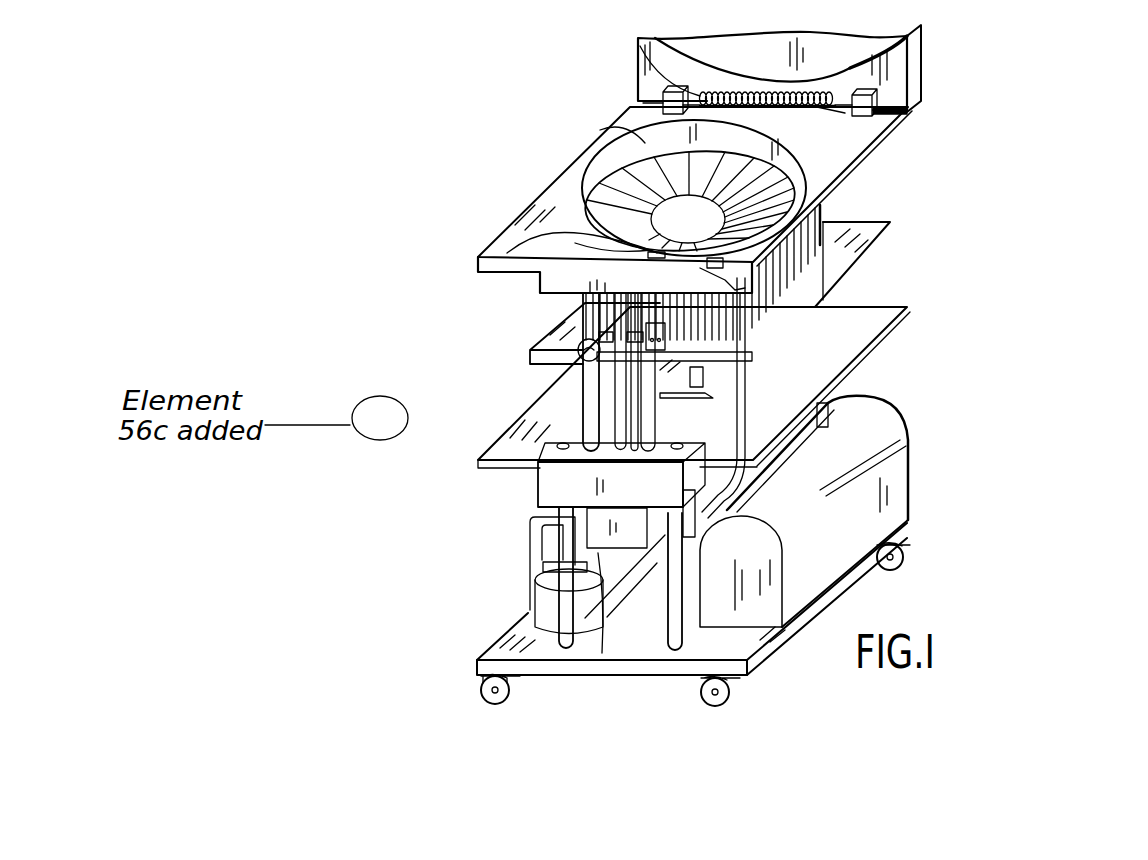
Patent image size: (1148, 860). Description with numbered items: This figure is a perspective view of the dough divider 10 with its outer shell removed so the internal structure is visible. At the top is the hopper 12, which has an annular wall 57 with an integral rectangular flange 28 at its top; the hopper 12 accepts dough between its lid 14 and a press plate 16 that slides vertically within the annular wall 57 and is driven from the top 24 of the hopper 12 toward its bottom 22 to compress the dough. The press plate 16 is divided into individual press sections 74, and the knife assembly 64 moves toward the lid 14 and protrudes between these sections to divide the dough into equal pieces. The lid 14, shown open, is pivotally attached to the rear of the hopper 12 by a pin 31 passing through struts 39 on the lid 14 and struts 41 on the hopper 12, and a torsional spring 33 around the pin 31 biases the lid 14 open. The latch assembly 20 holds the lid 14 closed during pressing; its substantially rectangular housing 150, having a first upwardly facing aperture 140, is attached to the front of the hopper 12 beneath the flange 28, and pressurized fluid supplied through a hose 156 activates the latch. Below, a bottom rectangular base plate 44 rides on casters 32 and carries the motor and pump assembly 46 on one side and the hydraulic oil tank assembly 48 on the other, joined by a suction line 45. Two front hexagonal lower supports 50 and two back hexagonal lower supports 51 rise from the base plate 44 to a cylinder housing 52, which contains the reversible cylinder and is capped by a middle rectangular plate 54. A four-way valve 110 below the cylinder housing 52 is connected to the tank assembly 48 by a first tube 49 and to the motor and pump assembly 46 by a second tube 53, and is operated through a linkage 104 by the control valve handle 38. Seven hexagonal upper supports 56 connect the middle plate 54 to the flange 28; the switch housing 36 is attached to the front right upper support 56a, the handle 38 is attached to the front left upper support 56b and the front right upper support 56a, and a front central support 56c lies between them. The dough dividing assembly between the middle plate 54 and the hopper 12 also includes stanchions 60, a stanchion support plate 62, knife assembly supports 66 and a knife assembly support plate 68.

The dough divider 10 is at (408, 379).
The hopper 12 is at (550, 186).
The lid 14 is at (930, 50).
The press plate 16 is at (618, 172).
The latch assembly 20 is at (700, 262).
The bottom of the hopper 22 is at (760, 290).
The top of the hopper 24 is at (690, 150).
The rectangular flange 28 is at (515, 218).
The pin 31 is at (715, 92).
The casters 32 is at (485, 0).
The torsional spring 33 is at (818, 113).
The switch housing 36 is at (703, 375).
The control valve handle 38 is at (578, 358).
The struts 39 is at (680, 90).
The struts 41 is at (662, 100).
The bottom rectangular base plate 44 is at (513, 633).
The suction line 45 is at (910, 510).
The motor and pump assembly 46 is at (905, 470).
The hydraulic oil tank assembly 48 is at (528, 556).
The first tube 49 is at (598, 610).
The front hexagonal lower supports 50 is at (563, 650).
The back hexagonal lower supports 51 is at (700, 485).
The cylinder housing 52 is at (560, 487).
The second tube 53 is at (658, 560).
The middle rectangular plate 54 is at (905, 322).
The upper supports 56 is at (590, 303).
The front right upper support 56a is at (747, 480).
The front left upper support 56b is at (625, 392).
The front central support 56c is at (580, 410).
The annular wall 57 is at (630, 140).
The stanchions 60 is at (820, 243).
The stanchion support plate 62 is at (890, 235).
The knife assembly 64 is at (762, 290).
The knife assembly supports 66 is at (745, 398).
The knife assembly support plate 68 is at (688, 400).
The individual press sections 74 is at (728, 182).
The linkage 104 is at (612, 420).
The four-way valve 110 is at (625, 540).
The first upwardly facing aperture 140 is at (480, 243).
The substantially rectangular housing 150 is at (545, 278).
The hose 156 is at (748, 427).